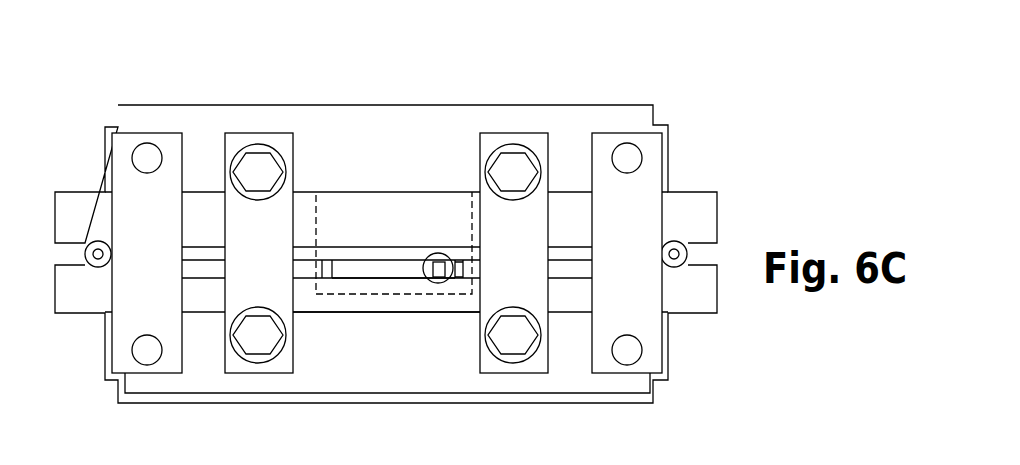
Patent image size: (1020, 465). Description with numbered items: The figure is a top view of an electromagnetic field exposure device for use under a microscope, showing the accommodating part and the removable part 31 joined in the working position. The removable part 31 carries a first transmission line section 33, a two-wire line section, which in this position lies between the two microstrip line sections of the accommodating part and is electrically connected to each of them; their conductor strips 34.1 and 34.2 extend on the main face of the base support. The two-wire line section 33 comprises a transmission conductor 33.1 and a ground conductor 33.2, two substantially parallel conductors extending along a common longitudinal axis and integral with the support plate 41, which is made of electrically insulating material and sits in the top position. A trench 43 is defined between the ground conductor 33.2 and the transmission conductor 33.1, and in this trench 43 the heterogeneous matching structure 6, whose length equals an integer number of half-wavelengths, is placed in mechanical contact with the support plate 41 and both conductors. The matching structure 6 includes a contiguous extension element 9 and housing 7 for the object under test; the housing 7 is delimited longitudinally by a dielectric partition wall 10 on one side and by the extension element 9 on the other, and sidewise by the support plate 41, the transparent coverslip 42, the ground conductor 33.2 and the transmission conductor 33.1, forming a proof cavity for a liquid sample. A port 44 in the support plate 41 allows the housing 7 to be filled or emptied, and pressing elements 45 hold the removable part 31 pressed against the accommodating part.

The removable part 31 is at (572, 87).
The support plate 41 is at (580, 192).
The pressing elements 45 is at (640, 195).
The conductor strip 34.1 is at (577, 255).
The conductor strip 34.2 is at (197, 252).
The first transmission line section 33 is at (445, 208).
The transmission conductor 33.1 is at (357, 250).
The ground conductor 33.2 is at (305, 305).
The trench 43 is at (316, 252).
The transparent coverslip 42 is at (468, 213).
The port 44 is at (433, 256).
The extension element 9 is at (366, 275).
The heterogeneous matching structure 6 is at (397, 292).
The housing 7 is at (437, 272).
The partition wall 10 is at (457, 272).